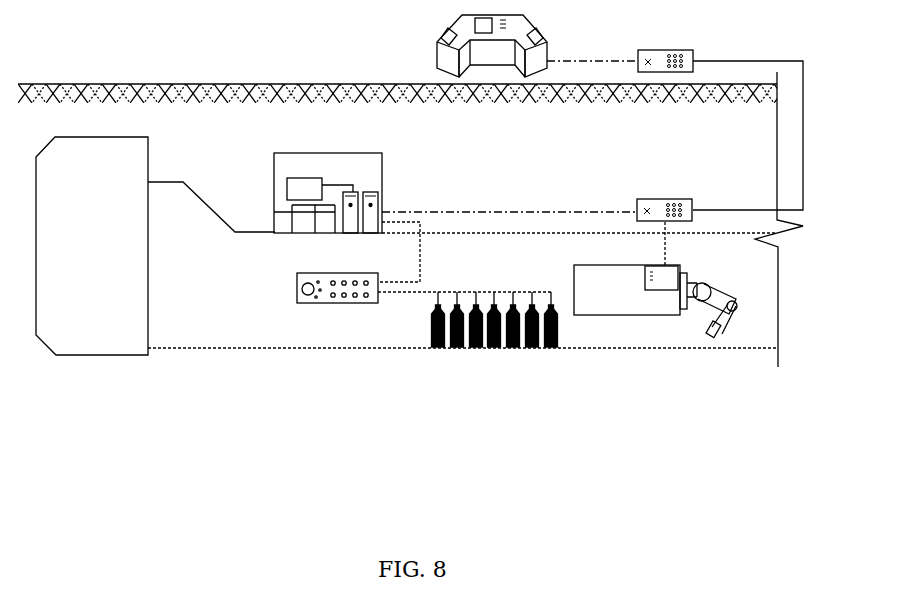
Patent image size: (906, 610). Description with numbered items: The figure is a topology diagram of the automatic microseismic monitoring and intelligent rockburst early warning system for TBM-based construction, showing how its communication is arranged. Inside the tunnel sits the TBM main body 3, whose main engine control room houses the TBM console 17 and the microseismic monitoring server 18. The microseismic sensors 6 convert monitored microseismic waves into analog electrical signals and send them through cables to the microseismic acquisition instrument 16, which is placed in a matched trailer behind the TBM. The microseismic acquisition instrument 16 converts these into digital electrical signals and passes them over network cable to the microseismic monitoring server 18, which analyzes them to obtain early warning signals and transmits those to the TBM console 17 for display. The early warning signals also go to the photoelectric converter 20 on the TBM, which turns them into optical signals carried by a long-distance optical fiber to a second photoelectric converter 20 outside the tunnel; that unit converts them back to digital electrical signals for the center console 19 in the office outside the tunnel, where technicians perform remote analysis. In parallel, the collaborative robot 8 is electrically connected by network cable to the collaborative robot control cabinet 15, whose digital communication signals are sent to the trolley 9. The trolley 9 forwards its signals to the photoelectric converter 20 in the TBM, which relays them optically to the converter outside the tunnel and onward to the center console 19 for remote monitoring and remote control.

The TBM main body 3 is at (72, 332).
The microseismic sensor 6 is at (480, 346).
The collaborative robot 8 is at (720, 330).
The trolley 9 is at (588, 300).
The collaborative robot control cabinet 15 is at (647, 290).
The microseismic acquisition instrument 16 is at (350, 305).
The TBM console 17 is at (300, 192).
The microseismic monitoring server 18 is at (376, 190).
The center console 19 is at (490, 66).
The photoelectric converter 20 is at (683, 72).